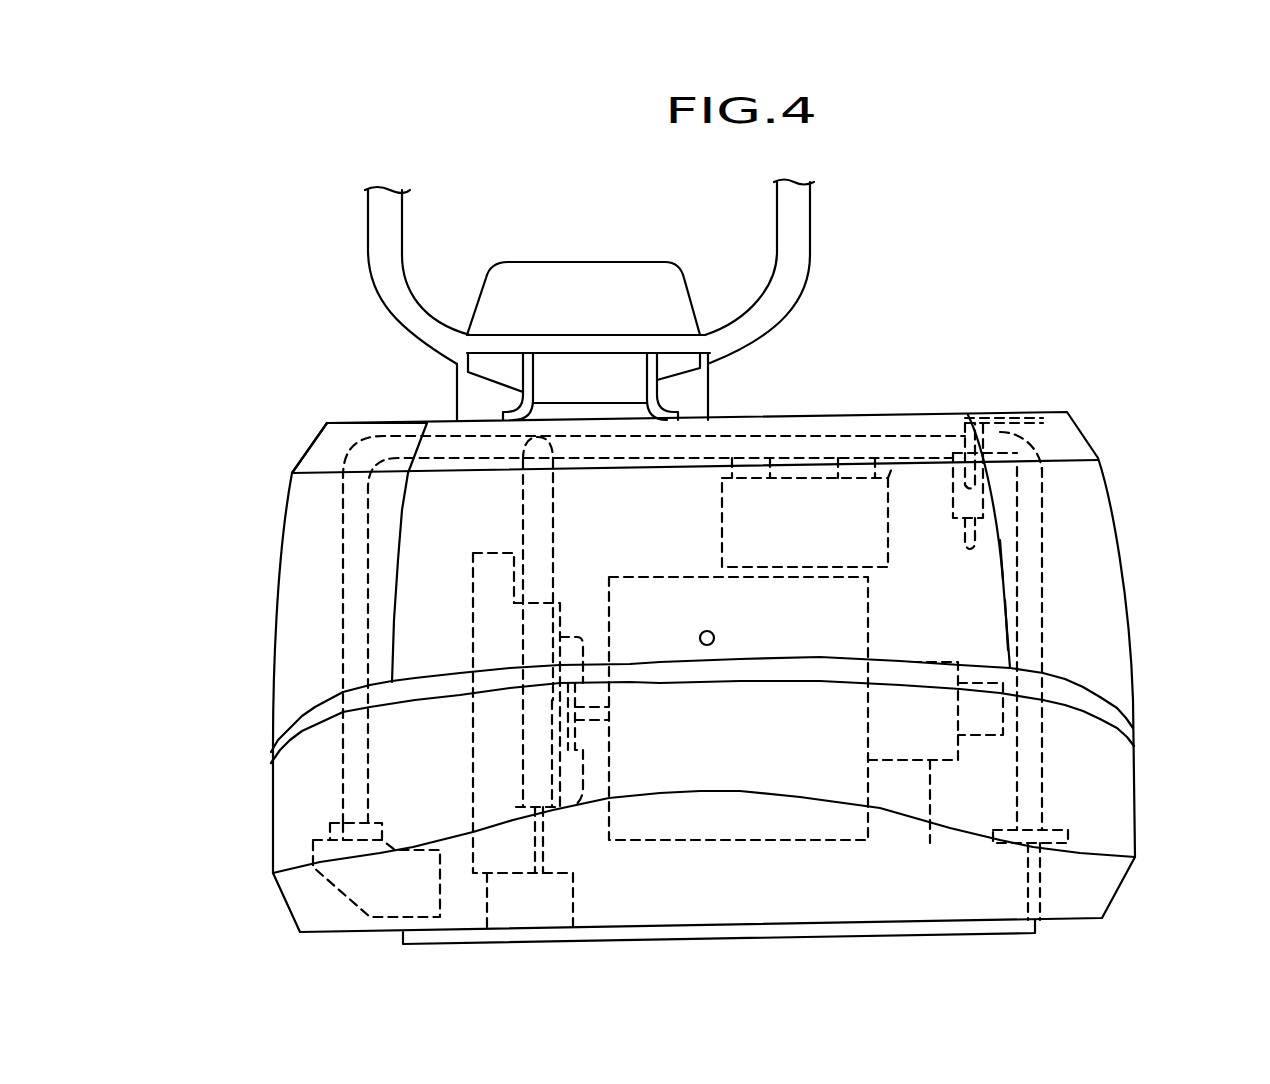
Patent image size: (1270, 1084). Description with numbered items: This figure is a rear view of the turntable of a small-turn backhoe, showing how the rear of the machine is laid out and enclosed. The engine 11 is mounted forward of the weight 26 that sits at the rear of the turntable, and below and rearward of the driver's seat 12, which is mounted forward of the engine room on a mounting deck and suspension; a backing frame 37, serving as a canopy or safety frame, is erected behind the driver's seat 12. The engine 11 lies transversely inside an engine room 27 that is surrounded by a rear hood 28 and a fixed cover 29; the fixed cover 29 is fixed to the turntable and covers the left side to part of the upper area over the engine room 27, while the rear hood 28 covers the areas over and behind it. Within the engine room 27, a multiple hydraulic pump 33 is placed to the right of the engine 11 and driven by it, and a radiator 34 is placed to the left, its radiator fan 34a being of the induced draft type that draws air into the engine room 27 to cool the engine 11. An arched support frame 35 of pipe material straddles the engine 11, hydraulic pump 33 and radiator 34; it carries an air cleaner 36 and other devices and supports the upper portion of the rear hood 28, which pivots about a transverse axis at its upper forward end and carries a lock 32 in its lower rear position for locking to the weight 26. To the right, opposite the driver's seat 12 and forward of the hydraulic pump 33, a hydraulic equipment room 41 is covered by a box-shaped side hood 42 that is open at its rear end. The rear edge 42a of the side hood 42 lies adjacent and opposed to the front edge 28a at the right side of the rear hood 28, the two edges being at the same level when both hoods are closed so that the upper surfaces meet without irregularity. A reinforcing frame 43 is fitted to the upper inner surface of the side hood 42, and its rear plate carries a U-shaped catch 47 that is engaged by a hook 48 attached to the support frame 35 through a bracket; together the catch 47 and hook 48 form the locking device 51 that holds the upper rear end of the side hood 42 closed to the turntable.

The engine 11 is at (703, 818).
The driver's seat 12 is at (598, 277).
The weight 26 is at (1125, 815).
The engine room 27 is at (698, 487).
The rear hood 28 is at (658, 487).
The front edge 28a is at (1015, 632).
The fixed cover 29 is at (305, 500).
The lock 32 is at (715, 636).
The multiple hydraulic pump 33 is at (939, 828).
The radiator 34 is at (483, 635).
The radiator fan 34a is at (577, 630).
The support frame 35 is at (1030, 558).
The air cleaner 36 is at (907, 455).
The backing frame 37 is at (800, 253).
The hydraulic equipment room 41 is at (1073, 510).
The side hood 42 is at (1123, 587).
The rear edge 42a is at (997, 568).
The reinforcing frame 43 is at (968, 415).
The catch 47 is at (1023, 423).
The hook 48 is at (1000, 493).
The locking device 51 is at (1160, 305).